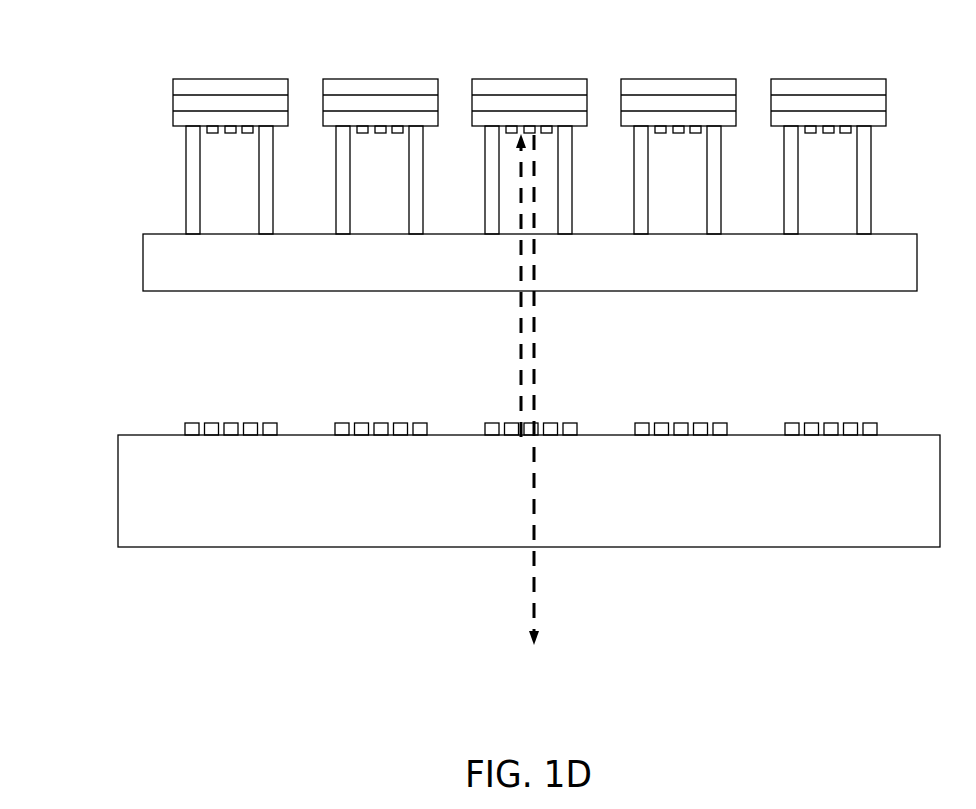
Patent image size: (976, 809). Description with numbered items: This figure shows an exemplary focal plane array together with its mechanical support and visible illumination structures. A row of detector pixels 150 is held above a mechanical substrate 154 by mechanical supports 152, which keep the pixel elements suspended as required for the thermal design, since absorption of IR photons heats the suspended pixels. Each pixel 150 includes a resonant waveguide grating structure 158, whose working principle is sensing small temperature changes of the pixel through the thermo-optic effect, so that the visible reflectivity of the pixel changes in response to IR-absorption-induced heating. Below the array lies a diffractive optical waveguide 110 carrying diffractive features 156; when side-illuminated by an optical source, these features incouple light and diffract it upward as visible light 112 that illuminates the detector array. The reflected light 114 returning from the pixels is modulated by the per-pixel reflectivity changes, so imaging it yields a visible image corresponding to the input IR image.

The diffractive optical waveguide 110 is at (335, 507).
The visible light 112 is at (521, 355).
The reflected light 114 is at (535, 337).
The pixels 150 is at (155, 73).
The mechanical supports 152 is at (177, 184).
The mechanical substrate 154 is at (468, 281).
The diffractive features 156 is at (168, 407).
The resonant waveguide grating structure 158 is at (178, 135).